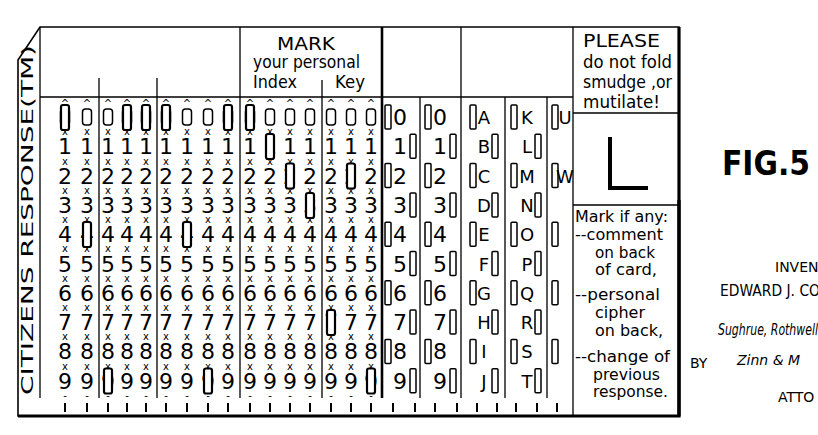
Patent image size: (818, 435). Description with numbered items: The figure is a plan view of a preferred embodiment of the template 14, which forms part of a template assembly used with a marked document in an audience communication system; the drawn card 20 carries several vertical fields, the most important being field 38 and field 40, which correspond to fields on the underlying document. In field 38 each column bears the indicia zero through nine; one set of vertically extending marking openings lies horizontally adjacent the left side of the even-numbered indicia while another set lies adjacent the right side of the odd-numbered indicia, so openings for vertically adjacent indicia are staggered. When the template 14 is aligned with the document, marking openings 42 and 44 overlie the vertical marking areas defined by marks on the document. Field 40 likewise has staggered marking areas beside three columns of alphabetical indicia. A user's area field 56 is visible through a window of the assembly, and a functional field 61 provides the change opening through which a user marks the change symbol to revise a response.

The response card 20 is at (681, 105).
The template 14 is at (72, 26).
The user's area field 56 is at (158, 27).
The marking opening 42 is at (385, 108).
The marking opening 44 is at (413, 134).
The field 38 is at (448, 45).
The field 40 is at (556, 50).
The functional field 61 is at (684, 331).